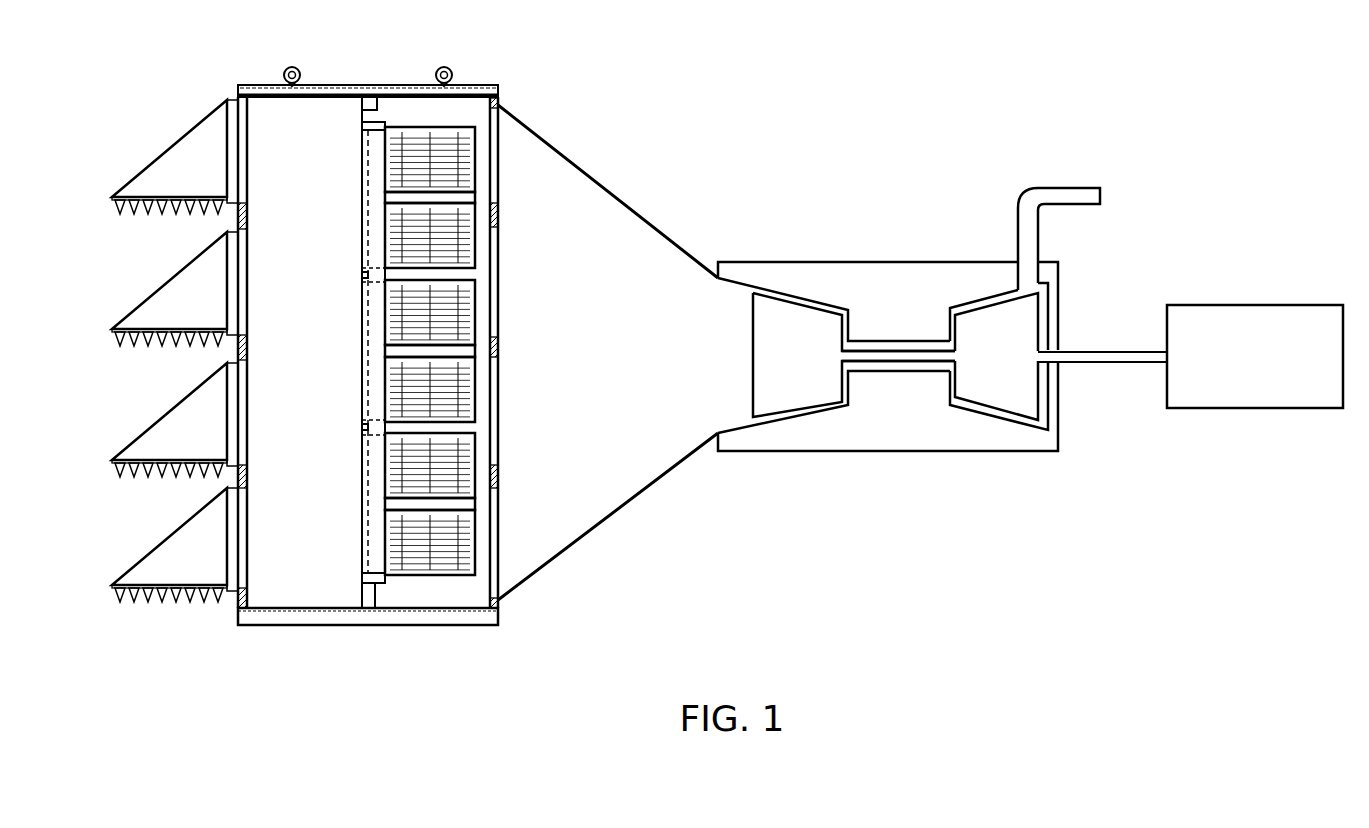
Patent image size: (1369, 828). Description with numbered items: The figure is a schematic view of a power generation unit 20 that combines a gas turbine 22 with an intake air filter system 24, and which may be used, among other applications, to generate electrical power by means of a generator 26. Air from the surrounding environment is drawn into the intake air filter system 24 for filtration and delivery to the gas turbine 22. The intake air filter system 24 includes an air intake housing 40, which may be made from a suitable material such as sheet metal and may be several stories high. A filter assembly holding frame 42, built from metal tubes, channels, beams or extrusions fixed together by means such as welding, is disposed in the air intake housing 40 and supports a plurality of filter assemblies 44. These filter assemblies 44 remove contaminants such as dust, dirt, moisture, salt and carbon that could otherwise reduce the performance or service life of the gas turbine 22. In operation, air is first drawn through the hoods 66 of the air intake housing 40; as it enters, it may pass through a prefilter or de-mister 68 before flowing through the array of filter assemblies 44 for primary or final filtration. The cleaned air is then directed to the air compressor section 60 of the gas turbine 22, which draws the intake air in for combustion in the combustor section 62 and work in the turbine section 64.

The power generation unit 20 is at (820, 85).
The gas turbine 22 is at (880, 263).
The intake air filter system 24 is at (480, 84).
The generator 26 is at (1233, 303).
The air intake housing 40 is at (350, 85).
The filter assembly holding frame 42 is at (380, 585).
The filter assemblies 44 is at (462, 180).
The air compressor section 60 is at (803, 420).
The combustor section 62 is at (900, 374).
The turbine section 64 is at (978, 410).
The hoods 66 is at (168, 147).
The de-mister 68 is at (162, 213).